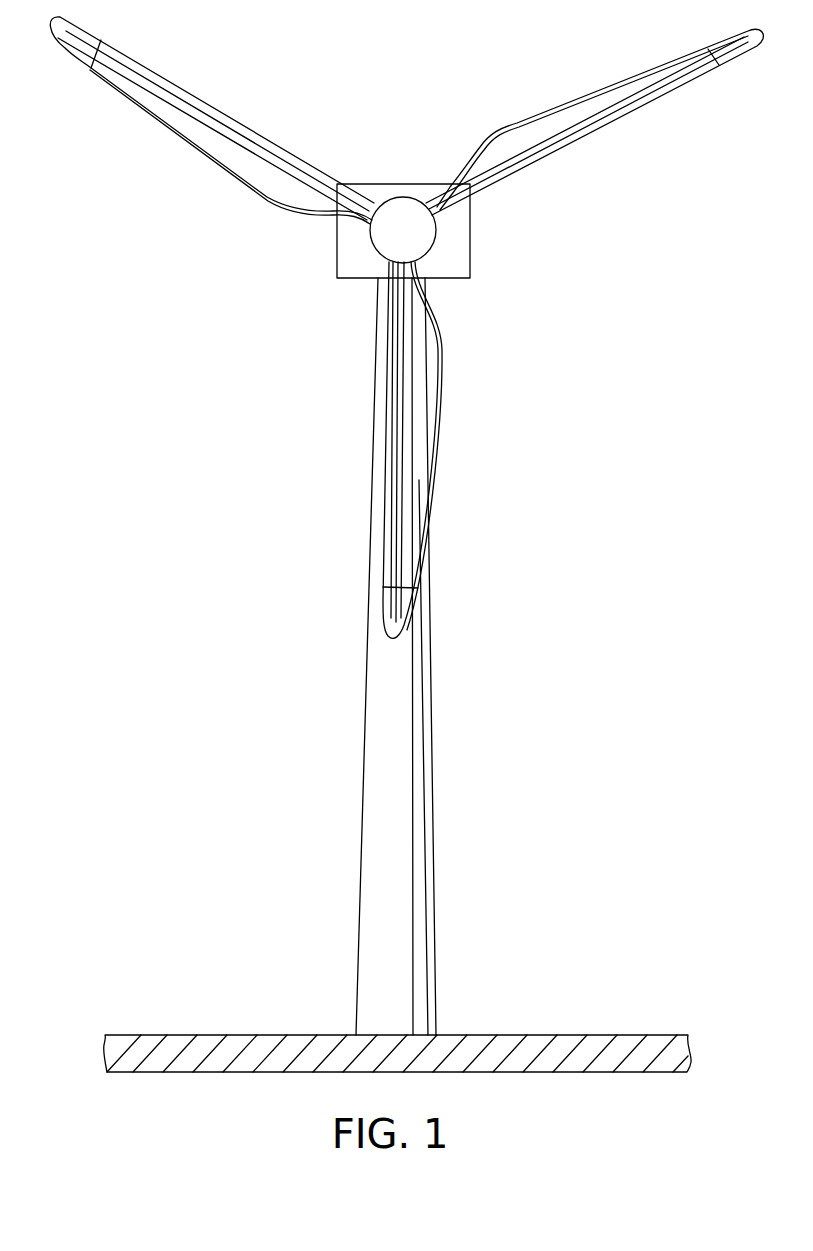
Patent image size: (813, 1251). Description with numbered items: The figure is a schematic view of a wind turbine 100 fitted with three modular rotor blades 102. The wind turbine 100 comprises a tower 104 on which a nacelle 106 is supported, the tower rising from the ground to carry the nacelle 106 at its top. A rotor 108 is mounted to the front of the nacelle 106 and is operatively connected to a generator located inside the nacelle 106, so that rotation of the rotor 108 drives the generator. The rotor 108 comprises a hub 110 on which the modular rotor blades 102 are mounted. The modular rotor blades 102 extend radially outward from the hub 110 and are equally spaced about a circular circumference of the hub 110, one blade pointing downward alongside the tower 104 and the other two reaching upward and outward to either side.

The wind turbine 100 is at (58, 616).
The modular rotor blades 102 is at (234, 173).
The tower 104 is at (432, 810).
The nacelle 106 is at (471, 250).
The rotor 108 is at (607, 369).
The hub 110 is at (385, 263).